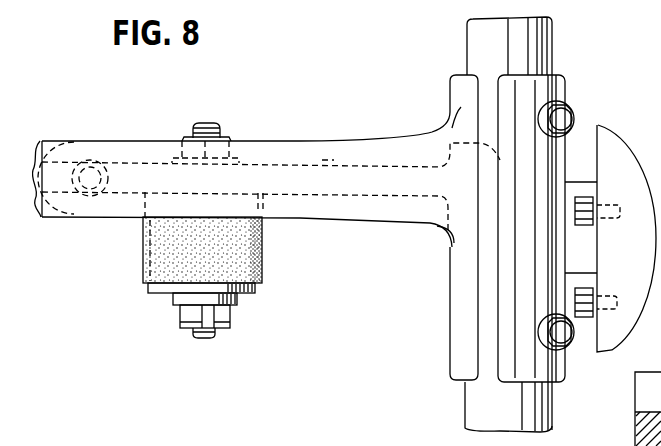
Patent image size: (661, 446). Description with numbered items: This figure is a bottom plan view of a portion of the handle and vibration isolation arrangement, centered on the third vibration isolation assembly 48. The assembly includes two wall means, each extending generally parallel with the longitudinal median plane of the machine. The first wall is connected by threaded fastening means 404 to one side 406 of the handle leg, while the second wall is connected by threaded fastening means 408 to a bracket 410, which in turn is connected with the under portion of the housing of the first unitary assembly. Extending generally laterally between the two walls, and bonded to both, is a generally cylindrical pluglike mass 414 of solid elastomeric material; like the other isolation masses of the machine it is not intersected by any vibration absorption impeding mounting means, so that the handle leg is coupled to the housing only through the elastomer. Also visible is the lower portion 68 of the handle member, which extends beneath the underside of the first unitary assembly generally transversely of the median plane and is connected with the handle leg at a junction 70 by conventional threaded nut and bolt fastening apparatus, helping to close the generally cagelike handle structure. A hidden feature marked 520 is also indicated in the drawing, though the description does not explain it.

The third vibration isolation assembly 48 is at (266, 227).
The lower portion of the handle member 68 is at (549, 45).
The junction 70 is at (583, 138).
The threaded fastening means 404 is at (205, 122).
The side of handle leg 406 is at (108, 141).
The threaded fastening means 408 is at (228, 313).
The bracket 410 is at (157, 294).
The pluglike mass 414 is at (157, 258).
The hole 520 is at (328, 165).